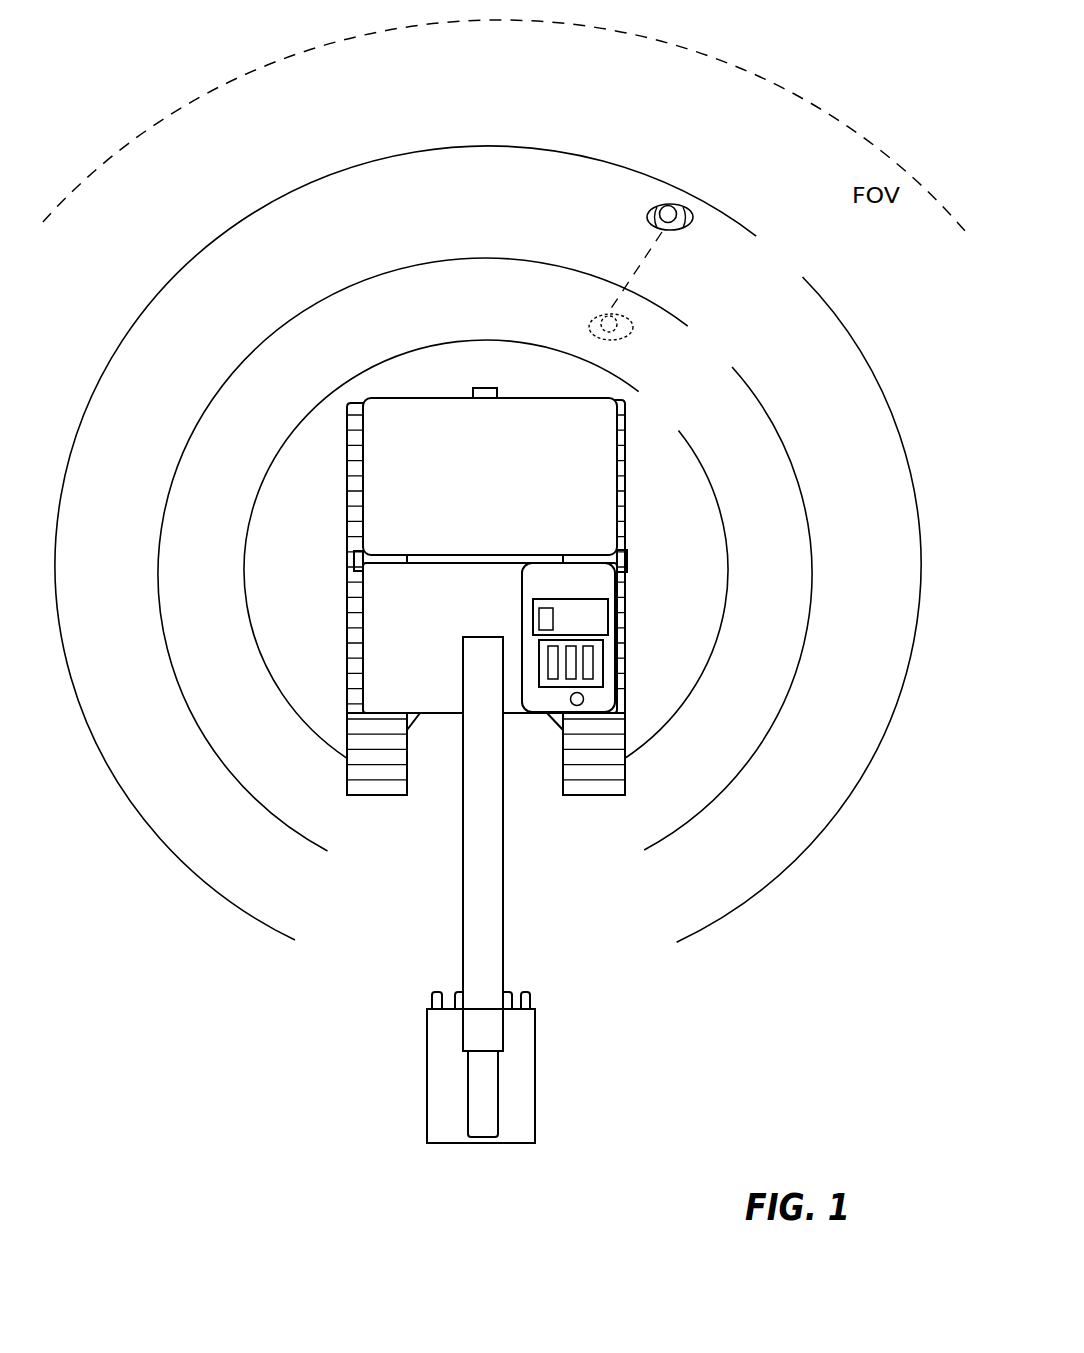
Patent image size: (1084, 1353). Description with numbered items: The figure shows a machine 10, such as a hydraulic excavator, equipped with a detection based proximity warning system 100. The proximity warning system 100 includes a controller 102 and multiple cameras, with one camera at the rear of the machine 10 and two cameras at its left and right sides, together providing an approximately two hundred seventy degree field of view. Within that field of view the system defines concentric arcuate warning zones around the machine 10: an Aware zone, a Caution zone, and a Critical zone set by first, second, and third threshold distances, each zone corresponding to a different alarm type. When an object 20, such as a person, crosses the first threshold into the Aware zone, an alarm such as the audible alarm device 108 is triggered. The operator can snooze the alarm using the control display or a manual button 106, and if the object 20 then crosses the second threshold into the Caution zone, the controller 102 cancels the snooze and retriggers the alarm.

The machine 10 is at (466, 765).
The object 20 is at (648, 201).
The detection based proximity warning system 100 is at (685, 596).
The controller 102 is at (535, 646).
The manual button 106 is at (570, 701).
The audible alarm device 108 is at (531, 599).